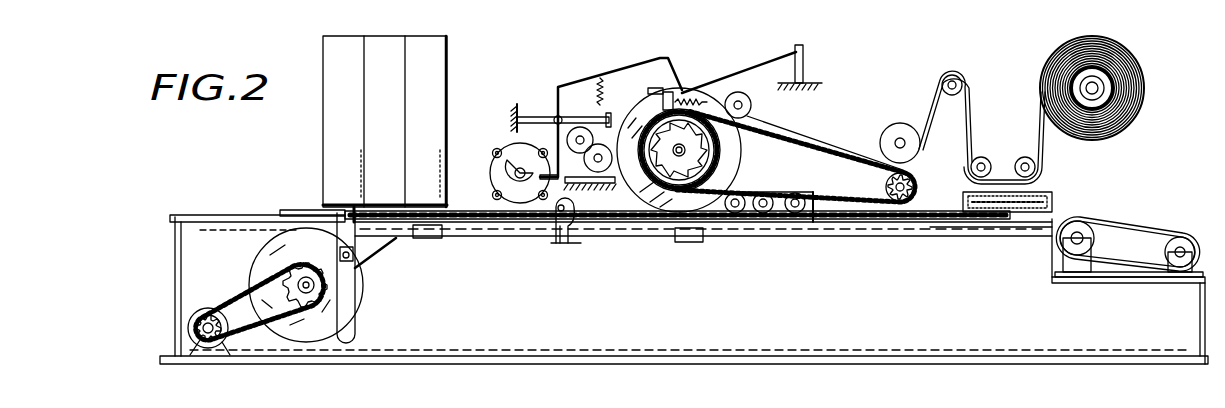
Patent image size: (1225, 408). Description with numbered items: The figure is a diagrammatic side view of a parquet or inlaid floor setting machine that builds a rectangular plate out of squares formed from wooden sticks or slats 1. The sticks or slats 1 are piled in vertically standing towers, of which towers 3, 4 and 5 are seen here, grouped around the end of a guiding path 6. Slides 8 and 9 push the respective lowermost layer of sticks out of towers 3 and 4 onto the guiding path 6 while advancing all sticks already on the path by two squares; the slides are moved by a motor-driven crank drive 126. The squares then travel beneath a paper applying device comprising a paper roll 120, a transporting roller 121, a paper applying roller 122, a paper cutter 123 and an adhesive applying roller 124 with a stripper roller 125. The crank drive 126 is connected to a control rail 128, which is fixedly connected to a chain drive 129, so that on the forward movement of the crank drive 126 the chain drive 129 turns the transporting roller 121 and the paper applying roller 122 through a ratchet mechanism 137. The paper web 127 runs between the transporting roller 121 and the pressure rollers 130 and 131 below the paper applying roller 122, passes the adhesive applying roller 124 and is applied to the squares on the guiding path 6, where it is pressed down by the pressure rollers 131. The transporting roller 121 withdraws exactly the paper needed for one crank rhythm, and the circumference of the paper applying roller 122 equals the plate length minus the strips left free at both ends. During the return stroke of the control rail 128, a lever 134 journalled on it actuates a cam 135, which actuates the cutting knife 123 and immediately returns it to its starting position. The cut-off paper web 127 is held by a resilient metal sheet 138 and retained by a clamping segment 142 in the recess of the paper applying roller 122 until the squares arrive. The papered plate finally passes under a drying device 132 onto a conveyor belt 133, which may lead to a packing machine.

The sticks or slats 1 is at (488, 219).
The tower 3 is at (383, 40).
The tower 4 is at (323, 89).
The tower 5 is at (447, 81).
The guiding path 6 is at (621, 223).
The slide 8 is at (357, 210).
The slide 9 is at (315, 211).
The paper roll 120 is at (1099, 126).
The transporting roller 121 is at (915, 186).
The paper applying roller 122 is at (640, 118).
The paper cutter 123 is at (570, 87).
The adhesive applying roller 124 is at (584, 184).
The stripper roller 125 is at (580, 127).
The crank drive 126 is at (356, 250).
The paper web 127 is at (818, 146).
The control rail 128 is at (664, 238).
The chain drive 129 is at (814, 194).
The pressure roller 130 is at (900, 123).
The pressure rollers 131 is at (748, 99).
The drying device 132 is at (1035, 193).
The conveyor belt 133 is at (1116, 228).
The lever 134 is at (565, 243).
The cam 135 is at (495, 176).
The ratchet mechanism 137 is at (740, 147).
The resilient metal sheet 138 is at (743, 73).
The clamping segment 142 is at (673, 92).